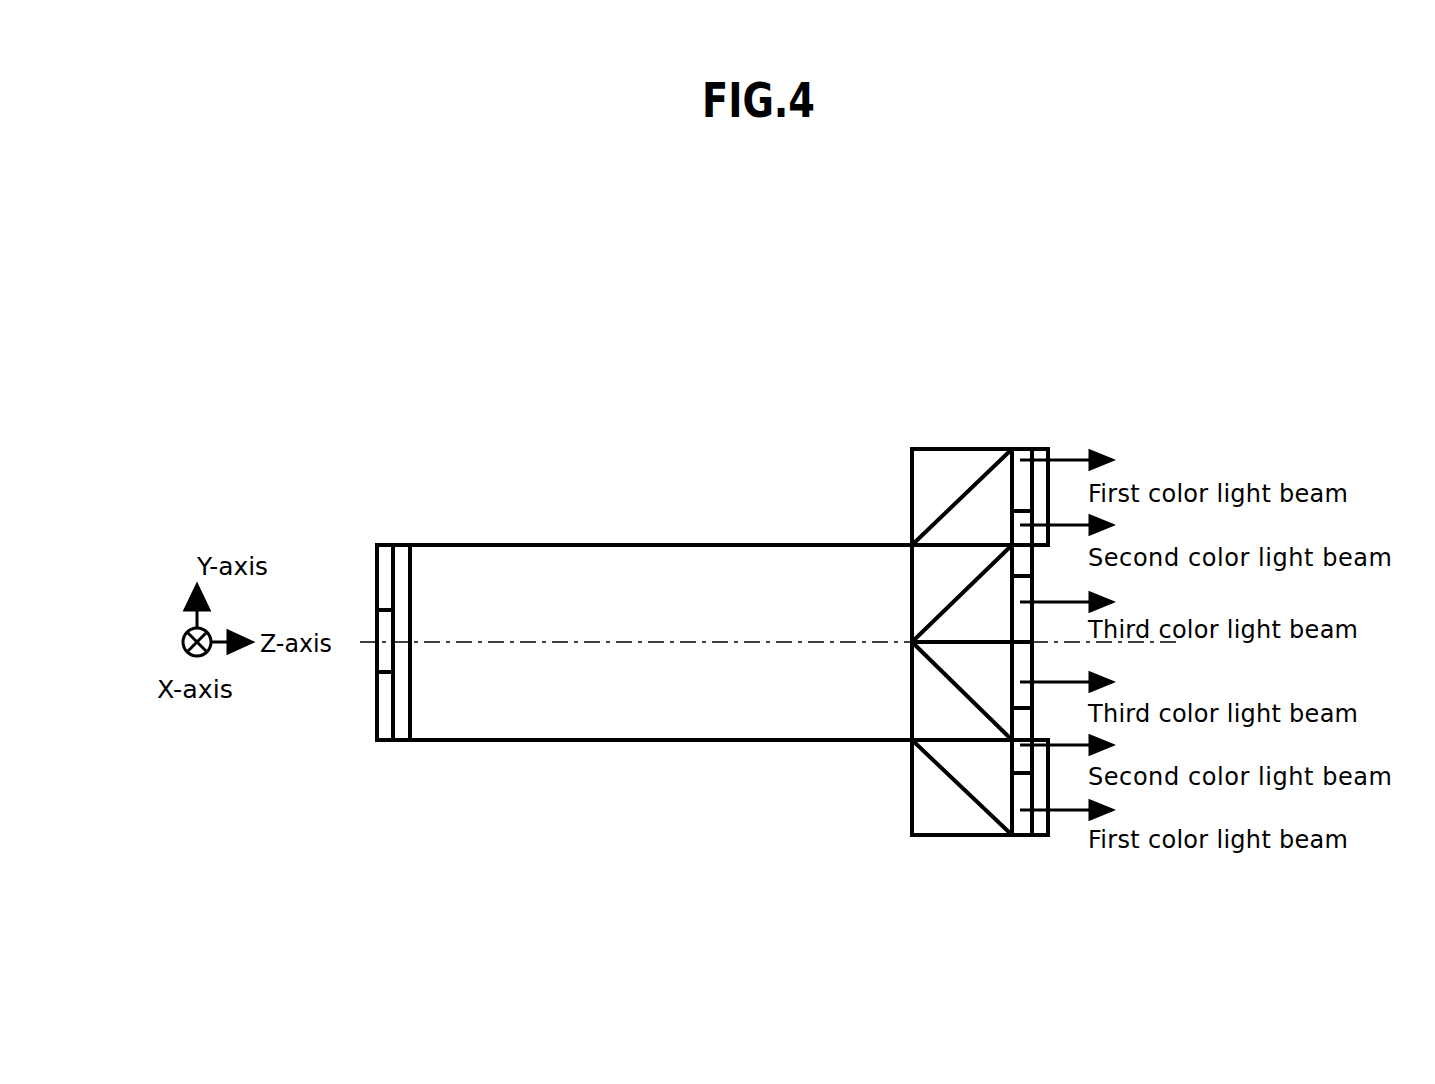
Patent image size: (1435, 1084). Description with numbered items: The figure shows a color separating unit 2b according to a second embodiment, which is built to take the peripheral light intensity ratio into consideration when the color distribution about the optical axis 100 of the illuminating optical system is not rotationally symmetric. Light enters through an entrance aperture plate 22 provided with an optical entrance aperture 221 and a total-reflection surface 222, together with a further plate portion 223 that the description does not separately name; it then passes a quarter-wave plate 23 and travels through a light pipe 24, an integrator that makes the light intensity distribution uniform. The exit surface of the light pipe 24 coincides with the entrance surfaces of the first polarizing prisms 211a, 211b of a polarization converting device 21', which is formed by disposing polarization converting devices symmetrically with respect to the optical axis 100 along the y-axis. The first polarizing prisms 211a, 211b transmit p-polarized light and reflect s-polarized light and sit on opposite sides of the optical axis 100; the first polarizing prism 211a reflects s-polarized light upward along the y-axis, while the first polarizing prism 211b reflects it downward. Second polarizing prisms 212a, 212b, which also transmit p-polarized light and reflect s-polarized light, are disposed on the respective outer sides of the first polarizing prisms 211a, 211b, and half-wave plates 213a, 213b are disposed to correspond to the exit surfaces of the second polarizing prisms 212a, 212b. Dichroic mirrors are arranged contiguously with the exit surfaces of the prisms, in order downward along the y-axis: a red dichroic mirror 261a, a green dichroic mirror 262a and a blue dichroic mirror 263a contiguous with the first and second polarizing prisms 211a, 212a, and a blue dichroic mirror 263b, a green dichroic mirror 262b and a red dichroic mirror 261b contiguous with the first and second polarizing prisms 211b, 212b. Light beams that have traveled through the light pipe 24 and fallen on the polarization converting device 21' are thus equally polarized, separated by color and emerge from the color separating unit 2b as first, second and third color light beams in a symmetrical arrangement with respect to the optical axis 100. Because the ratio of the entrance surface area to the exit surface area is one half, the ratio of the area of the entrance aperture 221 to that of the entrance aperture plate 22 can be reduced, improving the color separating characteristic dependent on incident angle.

The color separating unit 2b is at (1125, 308).
The polarization converting device 21' is at (968, 571).
The entrance aperture plate 22 is at (540, 600).
The entrance aperture 221 is at (385, 627).
The total-reflection surface 222 is at (387, 693).
The third solid-state light source 223 is at (387, 587).
The quarter-wave plate 23 is at (420, 547).
The light pipe 24 is at (607, 547).
The optical axis 100 is at (750, 643).
The first polarizing prism 211a is at (942, 615).
The first polarizing prism 211b is at (940, 665).
The second polarizing prism 212a is at (1025, 620).
The second polarizing prism 212b is at (1022, 655).
The half-wave plate 213a is at (1040, 452).
The half-wave plate 213b is at (1040, 837).
The red dichroic mirror 261a is at (1027, 492).
The green dichroic mirror 262a is at (1027, 547).
The blue dichroic mirror 263a is at (1025, 590).
The red dichroic mirror 261b is at (1024, 822).
The green dichroic mirror 262b is at (1023, 790).
The blue dichroic mirror 263b is at (1024, 728).